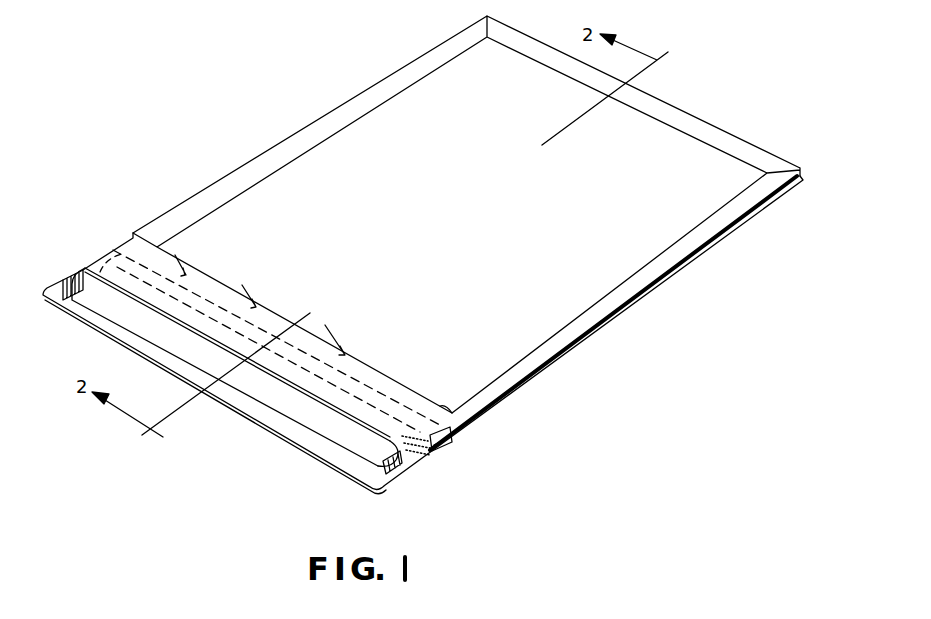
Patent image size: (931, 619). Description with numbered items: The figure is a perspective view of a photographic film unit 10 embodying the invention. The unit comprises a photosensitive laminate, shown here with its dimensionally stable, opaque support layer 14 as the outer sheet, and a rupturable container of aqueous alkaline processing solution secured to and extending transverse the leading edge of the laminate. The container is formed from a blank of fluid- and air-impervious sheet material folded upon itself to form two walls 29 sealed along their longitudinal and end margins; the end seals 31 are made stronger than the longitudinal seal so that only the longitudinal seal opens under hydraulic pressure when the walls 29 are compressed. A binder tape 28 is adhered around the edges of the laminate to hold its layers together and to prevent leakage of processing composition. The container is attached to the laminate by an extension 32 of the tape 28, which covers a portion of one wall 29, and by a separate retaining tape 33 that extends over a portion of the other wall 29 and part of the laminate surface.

The film unit 10 is at (192, 180).
The opaque support layer 14 is at (413, 108).
The tape 28 is at (288, 147).
The walls 29 is at (110, 298).
The end seals 31 is at (70, 277).
The extension of tape 32 is at (444, 452).
The retaining tape 33 is at (490, 402).